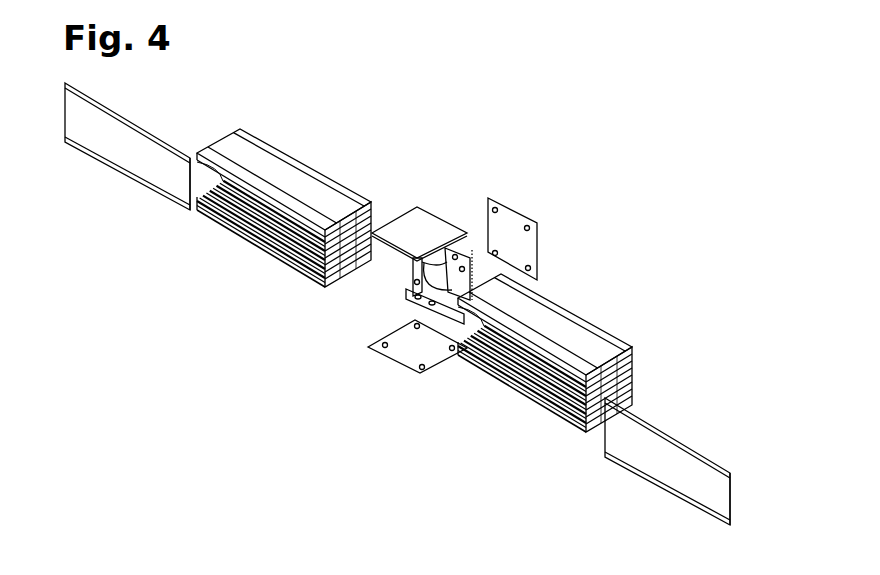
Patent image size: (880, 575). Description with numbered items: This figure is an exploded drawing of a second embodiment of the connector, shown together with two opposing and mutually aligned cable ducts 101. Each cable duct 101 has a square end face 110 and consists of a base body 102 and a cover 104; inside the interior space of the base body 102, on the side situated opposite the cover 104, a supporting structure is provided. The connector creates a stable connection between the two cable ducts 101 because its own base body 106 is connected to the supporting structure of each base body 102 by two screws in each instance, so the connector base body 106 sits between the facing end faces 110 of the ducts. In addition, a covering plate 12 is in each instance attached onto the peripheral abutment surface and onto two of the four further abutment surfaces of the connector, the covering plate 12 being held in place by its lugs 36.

The cable duct 101 is at (397, 300).
The base body 102 is at (318, 187).
The cover 104 is at (147, 145).
The base body 106 is at (403, 279).
The end face 110 is at (452, 295).
The covering plate 12 is at (408, 225).
The lug 36 is at (533, 231).